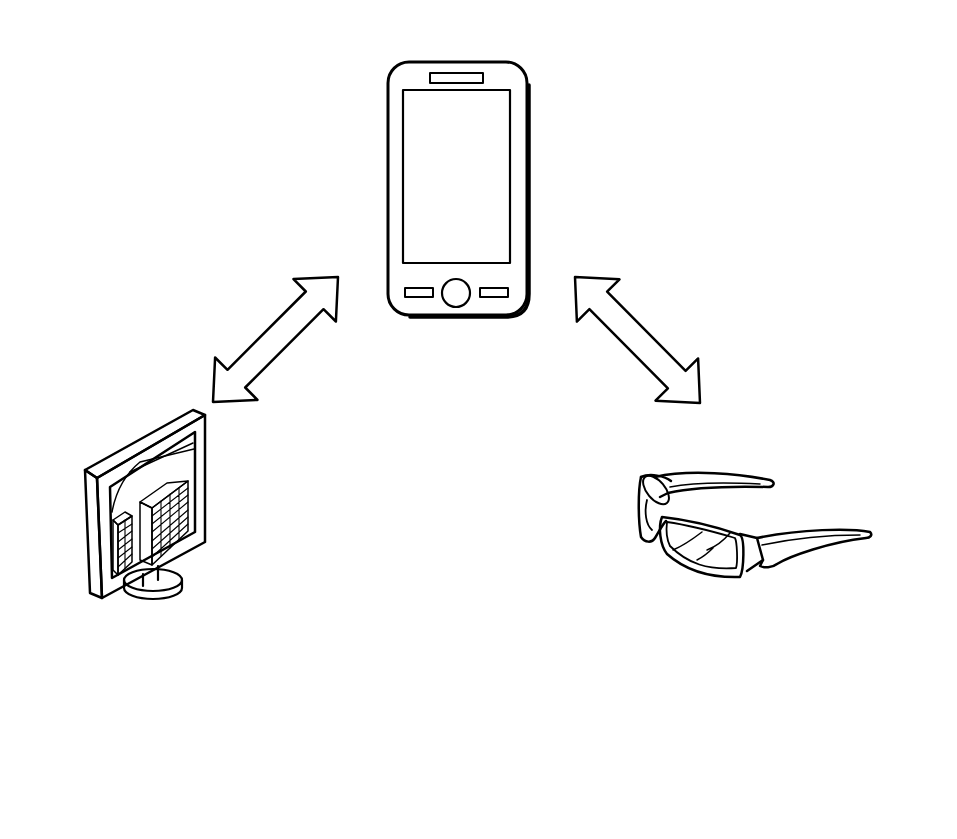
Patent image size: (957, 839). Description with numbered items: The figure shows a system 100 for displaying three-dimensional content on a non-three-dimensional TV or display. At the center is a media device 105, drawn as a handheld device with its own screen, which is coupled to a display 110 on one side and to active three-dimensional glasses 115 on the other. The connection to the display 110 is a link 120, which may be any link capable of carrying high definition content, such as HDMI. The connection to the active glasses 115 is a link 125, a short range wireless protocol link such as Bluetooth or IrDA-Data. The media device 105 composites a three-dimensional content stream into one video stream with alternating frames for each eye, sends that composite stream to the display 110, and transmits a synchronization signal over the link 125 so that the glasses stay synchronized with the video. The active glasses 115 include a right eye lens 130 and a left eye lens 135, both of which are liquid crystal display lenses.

The system 100 is at (753, 688).
The media device 105 is at (527, 186).
The display 110 is at (87, 532).
The active 3D glasses 115 is at (729, 523).
The link 120 is at (287, 350).
The link 125 is at (627, 349).
The right eye lens 130 is at (626, 525).
The left eye lens 135 is at (672, 571).